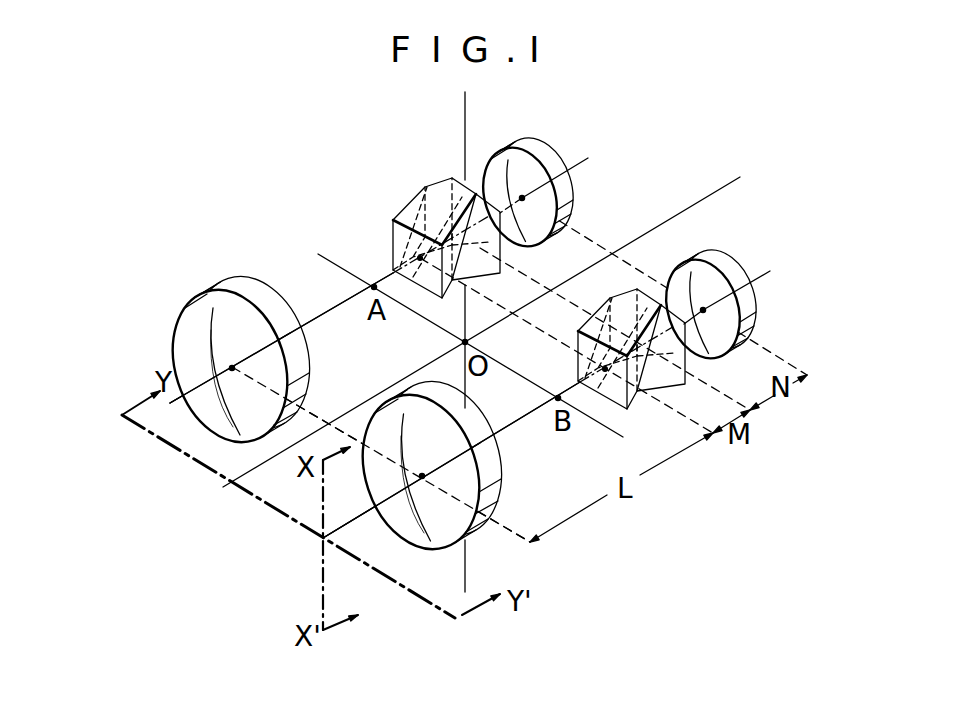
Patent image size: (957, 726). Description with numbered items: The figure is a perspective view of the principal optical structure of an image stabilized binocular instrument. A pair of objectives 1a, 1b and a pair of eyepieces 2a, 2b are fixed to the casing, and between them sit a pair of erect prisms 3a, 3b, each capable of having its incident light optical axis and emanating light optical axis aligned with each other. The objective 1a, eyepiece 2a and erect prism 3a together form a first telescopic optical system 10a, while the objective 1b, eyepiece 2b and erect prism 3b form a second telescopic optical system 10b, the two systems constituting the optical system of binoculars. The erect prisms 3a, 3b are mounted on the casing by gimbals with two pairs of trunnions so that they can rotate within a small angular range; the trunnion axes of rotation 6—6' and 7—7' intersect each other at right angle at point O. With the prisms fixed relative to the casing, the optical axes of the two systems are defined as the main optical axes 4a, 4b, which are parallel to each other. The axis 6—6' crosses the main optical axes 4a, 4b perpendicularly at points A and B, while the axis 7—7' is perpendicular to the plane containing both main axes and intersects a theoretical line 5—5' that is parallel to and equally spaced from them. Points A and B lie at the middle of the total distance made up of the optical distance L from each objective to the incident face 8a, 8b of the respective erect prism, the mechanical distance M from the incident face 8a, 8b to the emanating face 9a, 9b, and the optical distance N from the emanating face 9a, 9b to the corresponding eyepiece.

The objective 1a is at (253, 293).
The objective 1b is at (483, 527).
The eyepiece 2a is at (528, 153).
The eyepiece 2b is at (750, 318).
The erect prism 3a is at (458, 223).
The erect prism 3b is at (639, 370).
The main optical axis 4a is at (182, 406).
The main optical axis 4b is at (370, 513).
The theoretical line 5 is at (488, 328).
The theoretical line 5' is at (208, 493).
The axis of rotation of trunnions 6 is at (460, 334).
The axis of rotation of trunnions 6' is at (616, 450).
The axis of rotation of trunnions 7 is at (480, 341).
The axis of rotation of trunnions 7' is at (480, 587).
The incident face of erect prism 8a is at (397, 233).
The incident face of erect prism 8b is at (594, 349).
The emanating face of erect prism 9a is at (503, 258).
The emanating face of erect prism 9b is at (689, 357).
The first telescopic optical system 10a is at (575, 152).
The second telescopic optical system 10b is at (750, 262).